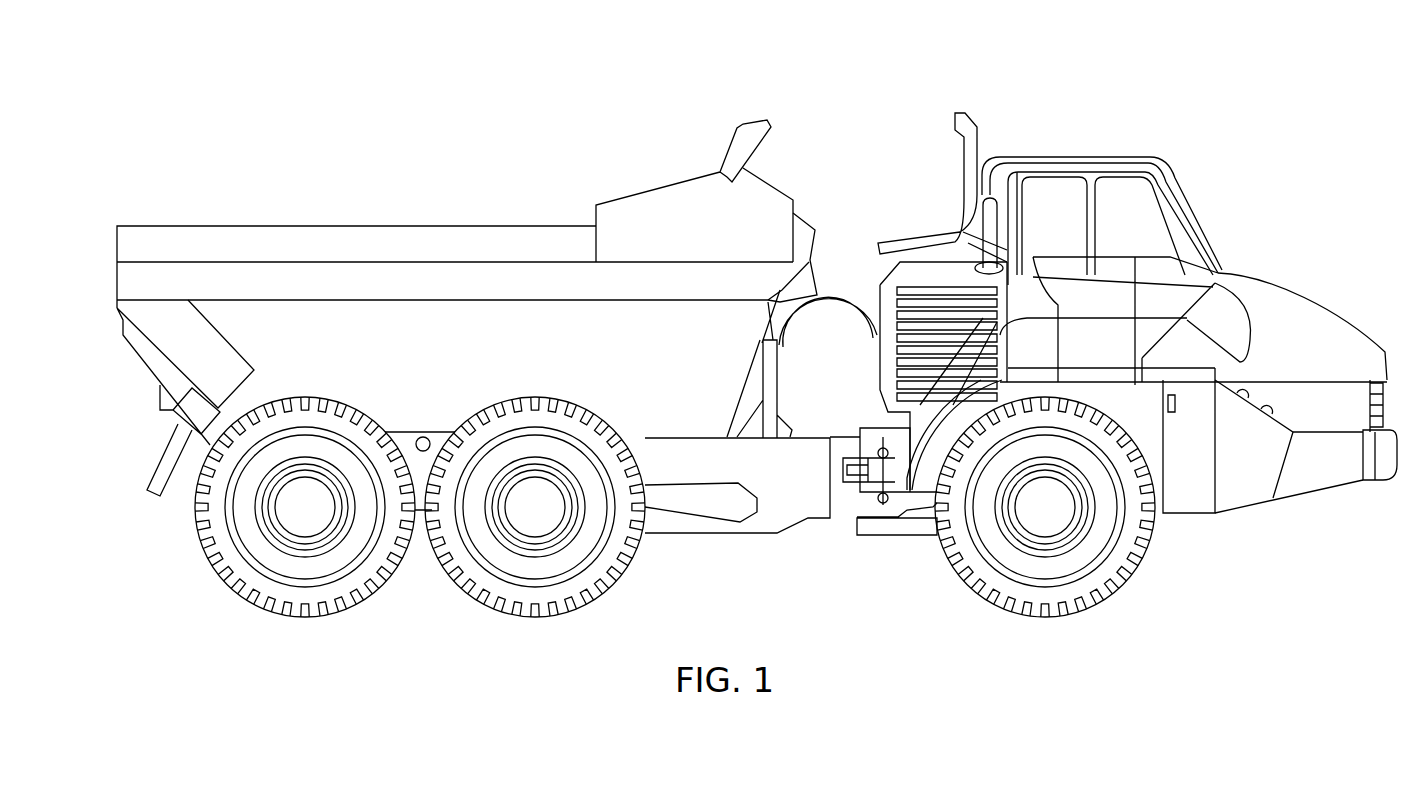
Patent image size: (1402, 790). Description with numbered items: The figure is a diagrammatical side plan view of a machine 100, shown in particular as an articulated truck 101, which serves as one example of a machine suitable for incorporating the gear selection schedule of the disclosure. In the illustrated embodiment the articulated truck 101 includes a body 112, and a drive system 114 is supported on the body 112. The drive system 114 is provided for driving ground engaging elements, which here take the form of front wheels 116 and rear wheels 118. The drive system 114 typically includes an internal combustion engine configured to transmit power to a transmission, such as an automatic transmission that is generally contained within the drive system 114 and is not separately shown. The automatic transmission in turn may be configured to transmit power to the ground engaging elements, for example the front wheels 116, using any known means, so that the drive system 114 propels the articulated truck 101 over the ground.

The machine 100 is at (630, 132).
The articulated truck 101 is at (902, 134).
The body 112 is at (775, 492).
The drive system 114 is at (1258, 432).
The front wheels 116 is at (977, 497).
The rear wheels 118 is at (212, 518).